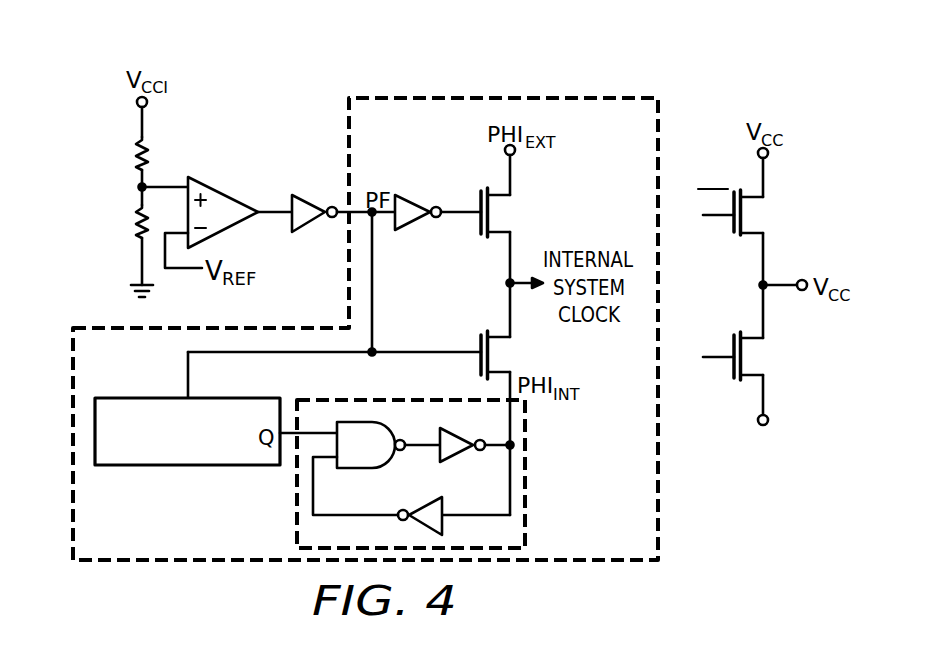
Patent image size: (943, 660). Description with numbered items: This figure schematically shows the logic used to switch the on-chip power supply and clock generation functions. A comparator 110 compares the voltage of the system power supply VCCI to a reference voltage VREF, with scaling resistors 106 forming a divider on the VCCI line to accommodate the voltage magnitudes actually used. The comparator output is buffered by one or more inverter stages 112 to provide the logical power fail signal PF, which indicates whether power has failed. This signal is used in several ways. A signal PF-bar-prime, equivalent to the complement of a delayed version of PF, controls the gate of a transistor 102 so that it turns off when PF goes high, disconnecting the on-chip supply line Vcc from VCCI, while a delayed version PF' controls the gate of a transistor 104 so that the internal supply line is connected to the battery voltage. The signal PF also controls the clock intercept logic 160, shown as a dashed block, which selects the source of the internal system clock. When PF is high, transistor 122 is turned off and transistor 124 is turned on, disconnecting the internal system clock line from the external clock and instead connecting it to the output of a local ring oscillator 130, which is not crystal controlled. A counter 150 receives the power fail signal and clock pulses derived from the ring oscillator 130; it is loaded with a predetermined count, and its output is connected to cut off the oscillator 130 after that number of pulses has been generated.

The transistor 102 is at (765, 214).
The transistor 104 is at (765, 354).
The scaling resistors 106 is at (128, 150).
The comparator 110 is at (228, 191).
The inverter stages 112 is at (309, 233).
The transistor 122 is at (512, 212).
The transistor 124 is at (512, 354).
The ring oscillator 130 is at (537, 497).
The counter 150 is at (188, 482).
The clock intercept logic 160 is at (489, 86).